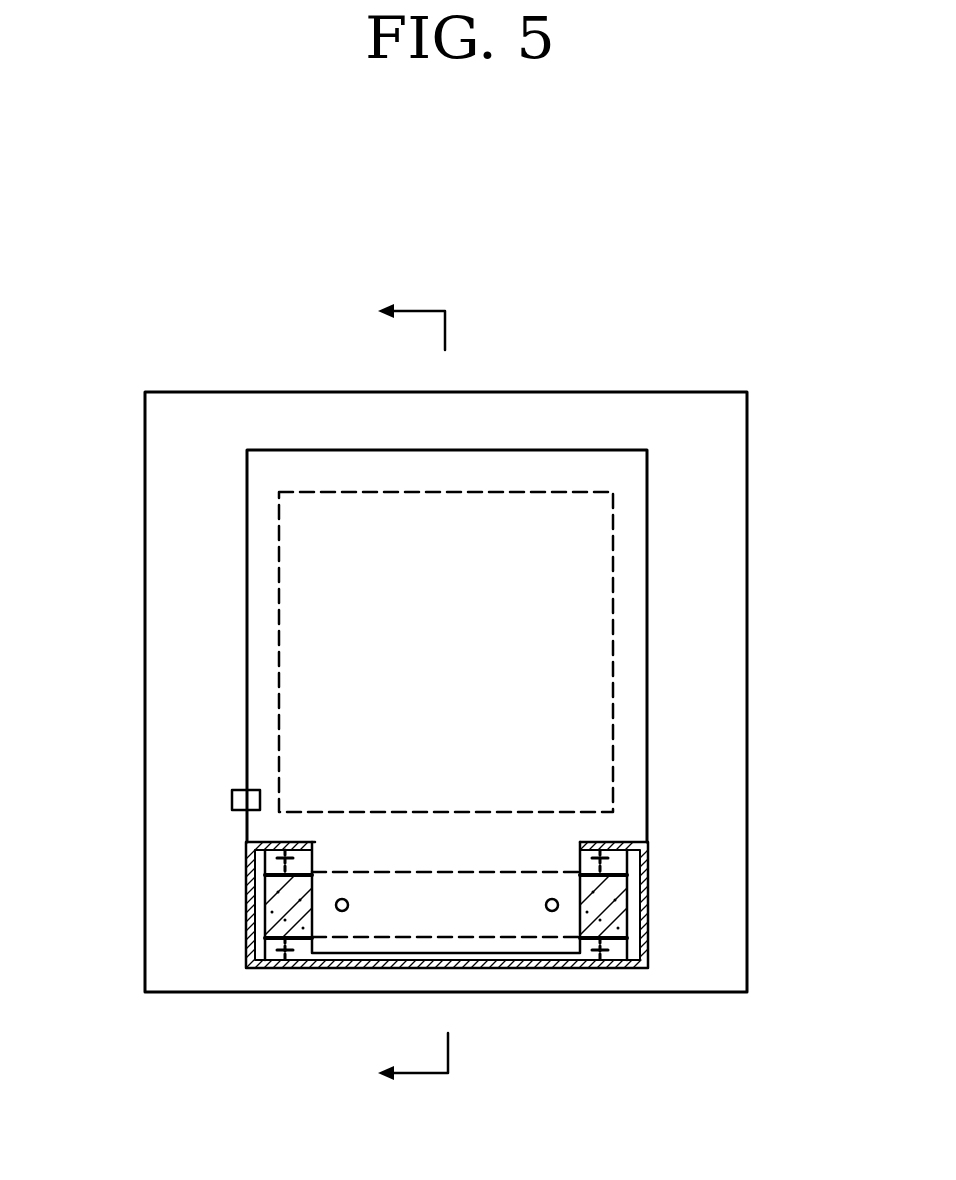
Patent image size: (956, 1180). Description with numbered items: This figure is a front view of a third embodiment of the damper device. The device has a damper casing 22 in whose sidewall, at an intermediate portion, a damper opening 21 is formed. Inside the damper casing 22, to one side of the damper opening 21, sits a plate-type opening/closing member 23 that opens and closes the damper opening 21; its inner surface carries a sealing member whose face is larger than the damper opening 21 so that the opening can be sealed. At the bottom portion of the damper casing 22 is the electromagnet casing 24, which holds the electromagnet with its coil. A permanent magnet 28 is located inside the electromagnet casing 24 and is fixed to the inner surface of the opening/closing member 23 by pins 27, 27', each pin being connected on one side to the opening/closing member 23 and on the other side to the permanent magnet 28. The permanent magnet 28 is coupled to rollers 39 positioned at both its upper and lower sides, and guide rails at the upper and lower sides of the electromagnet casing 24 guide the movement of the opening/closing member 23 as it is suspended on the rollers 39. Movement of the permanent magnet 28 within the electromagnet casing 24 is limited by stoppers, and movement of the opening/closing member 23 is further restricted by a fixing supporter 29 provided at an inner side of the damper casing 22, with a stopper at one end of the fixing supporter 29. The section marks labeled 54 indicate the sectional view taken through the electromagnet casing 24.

The damper opening 21 is at (313, 495).
The damper casing 22 is at (631, 391).
The opening/closing member 23 is at (647, 494).
The electromagnet casing 24 is at (648, 897).
The pin 27 is at (334, 1006).
The pin 27' is at (569, 1000).
The permanent magnet 28 is at (247, 964).
The fixing supporter 29 is at (232, 805).
The rollers 39 is at (287, 860).
The section line 54 is at (435, 692).